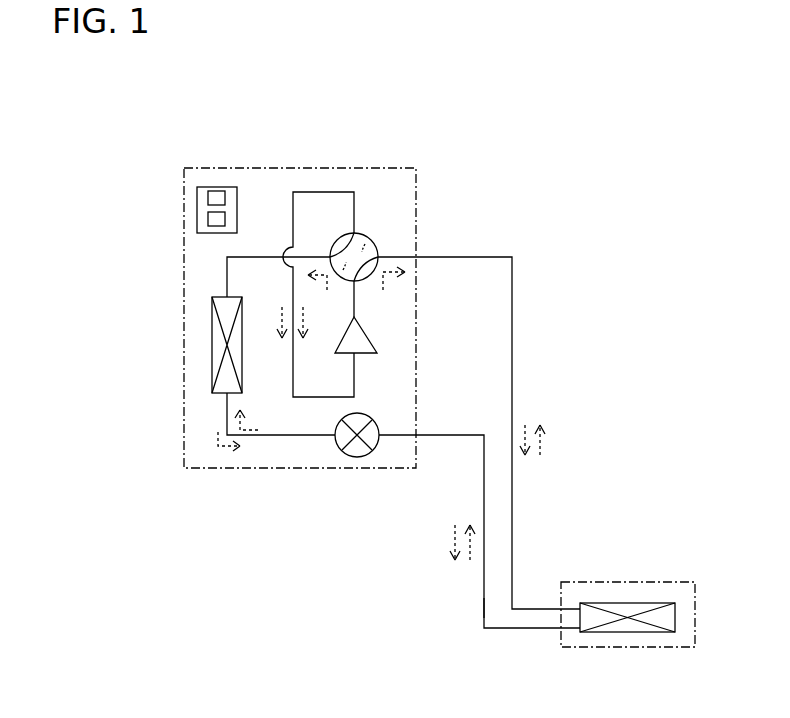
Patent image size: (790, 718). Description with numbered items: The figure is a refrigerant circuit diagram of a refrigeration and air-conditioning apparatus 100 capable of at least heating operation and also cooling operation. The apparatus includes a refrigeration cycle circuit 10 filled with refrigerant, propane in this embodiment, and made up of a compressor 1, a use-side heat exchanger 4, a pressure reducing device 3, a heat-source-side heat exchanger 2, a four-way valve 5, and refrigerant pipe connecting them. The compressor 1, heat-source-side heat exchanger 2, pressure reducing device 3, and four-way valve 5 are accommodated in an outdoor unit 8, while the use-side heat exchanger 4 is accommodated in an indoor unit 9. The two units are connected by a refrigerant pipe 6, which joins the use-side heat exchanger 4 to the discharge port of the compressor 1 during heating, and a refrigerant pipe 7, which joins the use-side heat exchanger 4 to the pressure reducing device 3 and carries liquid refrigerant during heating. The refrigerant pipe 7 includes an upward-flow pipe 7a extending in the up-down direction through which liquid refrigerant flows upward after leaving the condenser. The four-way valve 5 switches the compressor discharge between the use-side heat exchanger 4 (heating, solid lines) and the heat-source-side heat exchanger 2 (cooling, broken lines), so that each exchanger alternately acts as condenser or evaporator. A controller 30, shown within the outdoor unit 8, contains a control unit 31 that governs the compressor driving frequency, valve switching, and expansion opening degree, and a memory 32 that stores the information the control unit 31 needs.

The refrigeration and air-conditioning apparatus 100 is at (481, 142).
The outdoor unit 8 is at (297, 168).
The controller 30 is at (216, 187).
The control unit 31 is at (208, 200).
The memory 32 is at (208, 216).
The refrigeration cycle circuit 10 is at (365, 375).
The heat-source-side heat exchanger 2 is at (220, 345).
The four-way valve 5 is at (372, 238).
The compressor 1 is at (358, 342).
The pressure reducing device 3 is at (357, 455).
The refrigerant pipe 6 is at (512, 283).
The refrigerant pipe 7 is at (493, 633).
The upward-flow pipe 7a is at (484, 598).
The indoor unit 9 is at (627, 582).
The use-side heat exchanger 4 is at (628, 628).